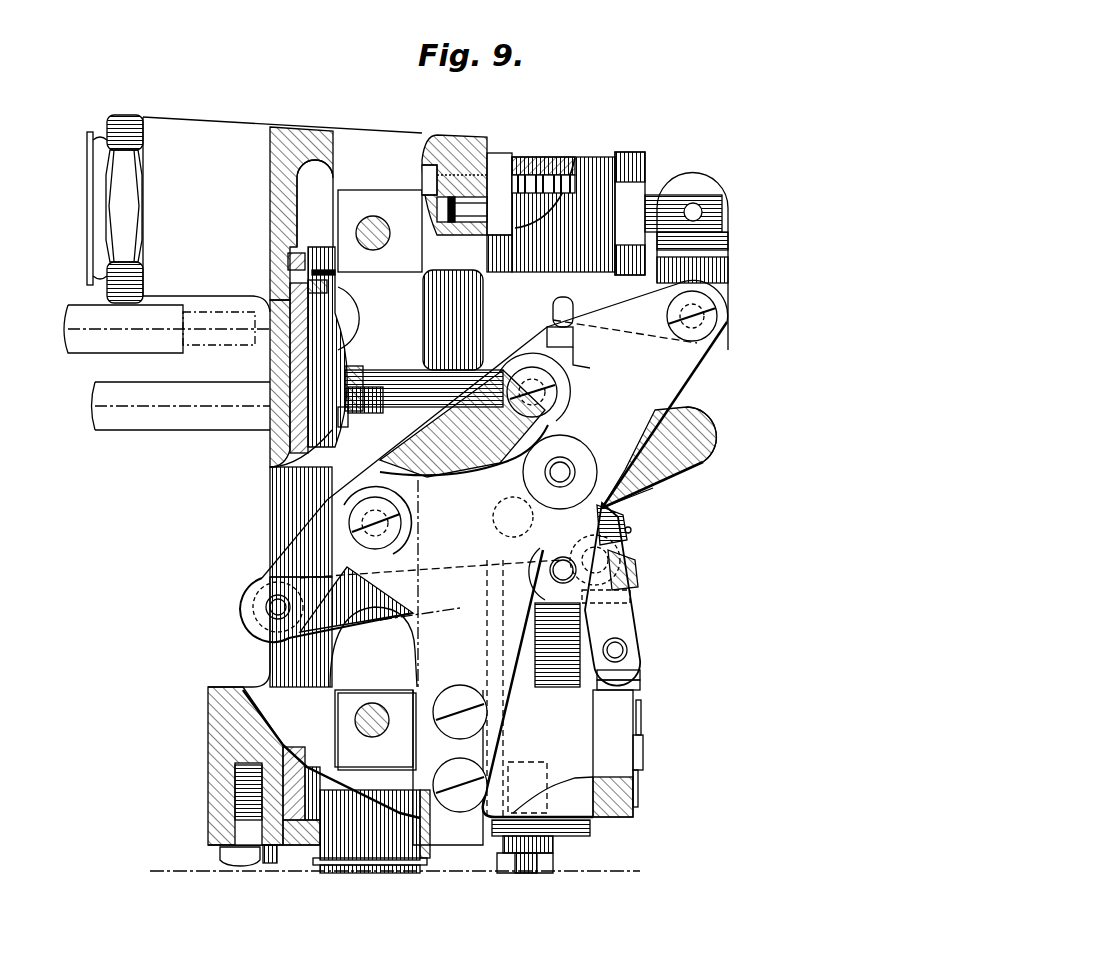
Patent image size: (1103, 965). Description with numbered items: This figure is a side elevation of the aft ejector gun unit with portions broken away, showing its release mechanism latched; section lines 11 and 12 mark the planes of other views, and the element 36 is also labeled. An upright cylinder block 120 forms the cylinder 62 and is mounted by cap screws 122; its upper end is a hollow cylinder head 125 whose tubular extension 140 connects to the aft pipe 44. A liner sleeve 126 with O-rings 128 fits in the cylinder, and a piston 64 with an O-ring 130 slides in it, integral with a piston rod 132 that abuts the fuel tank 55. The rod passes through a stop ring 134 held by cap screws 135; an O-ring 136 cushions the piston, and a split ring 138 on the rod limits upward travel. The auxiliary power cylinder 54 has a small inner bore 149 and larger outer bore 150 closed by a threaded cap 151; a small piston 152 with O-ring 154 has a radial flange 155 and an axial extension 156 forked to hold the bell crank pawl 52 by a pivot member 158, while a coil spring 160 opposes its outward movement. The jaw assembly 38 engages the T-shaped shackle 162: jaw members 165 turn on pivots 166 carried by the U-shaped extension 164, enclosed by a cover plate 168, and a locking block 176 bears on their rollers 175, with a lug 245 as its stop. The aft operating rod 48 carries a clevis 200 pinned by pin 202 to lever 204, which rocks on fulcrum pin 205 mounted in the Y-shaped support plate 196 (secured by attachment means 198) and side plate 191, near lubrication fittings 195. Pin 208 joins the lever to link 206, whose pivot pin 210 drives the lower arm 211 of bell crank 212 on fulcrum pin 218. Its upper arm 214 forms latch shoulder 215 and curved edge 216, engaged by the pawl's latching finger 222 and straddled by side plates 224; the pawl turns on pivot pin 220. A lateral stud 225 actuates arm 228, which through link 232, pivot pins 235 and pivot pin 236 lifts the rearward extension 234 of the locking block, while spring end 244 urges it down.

The section line 11- 11 is at (240, 637).
The section line 12- 12 is at (106, 208).
The housing wall 36 is at (270, 483).
The jaw assembly 38 is at (644, 705).
The aft pipe 44 is at (87, 278).
The aft operating rod 48 is at (128, 350).
The bell crank pawl 52 is at (728, 278).
The auxiliary power cylinder 54 is at (614, 152).
The fuel tank 55 is at (183, 868).
The cylinder 62 is at (270, 532).
The piston 64 is at (335, 272).
The cylinder block 120 is at (270, 658).
The cap screws 122 is at (384, 214).
The hollow cylinder head 125 is at (322, 134).
The liner sleeve 126 is at (282, 438).
The O-rings 128 is at (288, 262).
The O-ring 130 is at (308, 288).
The piston rod 132 is at (340, 334).
The stop ring 134 is at (292, 845).
The cap screws 135 is at (246, 866).
The O-ring 136 is at (312, 845).
The split ring 138 is at (408, 873).
The tubular extension 140 is at (237, 126).
The inner bore 149 is at (470, 226).
The outer bore 150 is at (548, 170).
The threaded cap 151 is at (632, 165).
The small piston 152 is at (450, 222).
The O-ring 154 is at (455, 168).
The radial flange 155 is at (505, 180).
The axial extension 156 is at (660, 196).
The pivot member 158 is at (698, 204).
The coil spring 160 is at (538, 170).
The T-shaped shackle 162 is at (500, 850).
The U-shaped extension 164 is at (615, 817).
The jaw members 165 is at (585, 836).
The pivots 166 is at (643, 750).
The cover plate 168 is at (638, 792).
The rollers 175 is at (556, 687).
The locking block 176 is at (525, 705).
The side plate 191 is at (495, 350).
The lubrication fittings 195 is at (424, 182).
The Y-shaped support plate 196 is at (690, 370).
The attachment means 198 is at (452, 738).
The clevis 200 is at (245, 350).
The pin 202 is at (530, 378).
The lever 204 is at (268, 556).
The fulcrum pin 205 is at (380, 505).
The rearwardly extending link 206 is at (370, 608).
The pin 208 is at (265, 616).
The pivot pin 210 is at (550, 576).
The lower arm 211 is at (548, 563).
The bell crank 212 is at (659, 497).
The upper arm 214 is at (693, 466).
The latch shoulder 215 is at (553, 330).
The curved edge 216 is at (700, 440).
The fulcrum pin 218 is at (566, 462).
The pivot pin 220 is at (718, 318).
The latching finger 222 is at (550, 334).
The side plates 224 is at (605, 352).
The lateral stud 225 is at (490, 537).
The arm 228 is at (638, 598).
The link 232 is at (636, 616).
The rearward extension 234 is at (640, 672).
The pivot pins 235 is at (628, 548).
The pivot pin 236 is at (630, 650).
The spring end 244 is at (646, 523).
The lug 245 is at (640, 686).